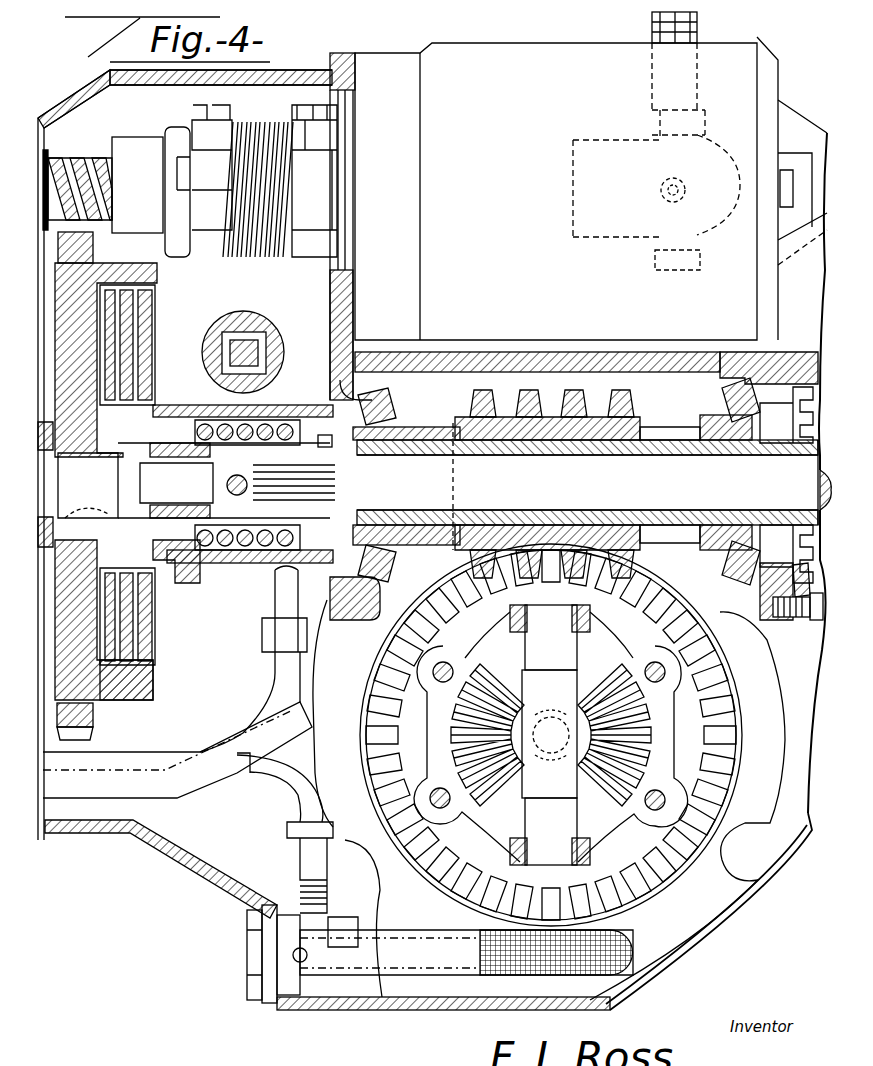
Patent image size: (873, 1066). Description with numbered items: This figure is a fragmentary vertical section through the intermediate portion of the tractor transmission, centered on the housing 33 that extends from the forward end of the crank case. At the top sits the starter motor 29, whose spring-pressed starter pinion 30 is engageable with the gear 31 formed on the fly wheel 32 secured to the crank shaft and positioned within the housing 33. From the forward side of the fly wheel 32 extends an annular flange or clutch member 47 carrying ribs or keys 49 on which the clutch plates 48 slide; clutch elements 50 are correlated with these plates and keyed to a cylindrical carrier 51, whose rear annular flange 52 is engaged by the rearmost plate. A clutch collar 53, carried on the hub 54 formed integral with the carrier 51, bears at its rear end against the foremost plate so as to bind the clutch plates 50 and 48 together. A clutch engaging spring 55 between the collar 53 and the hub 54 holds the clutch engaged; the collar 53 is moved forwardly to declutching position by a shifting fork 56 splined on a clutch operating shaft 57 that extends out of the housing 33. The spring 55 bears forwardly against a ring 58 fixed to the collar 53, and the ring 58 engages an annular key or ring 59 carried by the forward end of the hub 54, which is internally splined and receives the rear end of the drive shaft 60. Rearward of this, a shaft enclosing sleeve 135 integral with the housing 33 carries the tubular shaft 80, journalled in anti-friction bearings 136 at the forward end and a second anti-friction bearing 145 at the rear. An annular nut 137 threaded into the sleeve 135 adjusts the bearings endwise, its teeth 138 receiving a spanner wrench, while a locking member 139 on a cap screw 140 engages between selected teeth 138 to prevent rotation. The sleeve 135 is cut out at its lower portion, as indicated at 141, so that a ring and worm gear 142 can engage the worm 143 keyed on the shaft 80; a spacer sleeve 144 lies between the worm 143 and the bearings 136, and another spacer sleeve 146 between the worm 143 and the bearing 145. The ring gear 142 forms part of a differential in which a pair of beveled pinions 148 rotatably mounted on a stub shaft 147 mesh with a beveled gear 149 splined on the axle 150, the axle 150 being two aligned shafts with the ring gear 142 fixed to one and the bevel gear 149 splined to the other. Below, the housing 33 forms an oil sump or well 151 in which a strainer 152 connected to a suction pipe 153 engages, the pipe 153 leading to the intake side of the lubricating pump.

The starter motor 29 is at (517, 60).
The starter pinion 30 is at (133, 160).
The gear 31 is at (93, 252).
The fly wheel 32 is at (97, 690).
The housing 33 is at (160, 850).
The annular flange or clutch member 47 is at (157, 283).
The clutch plates 48 is at (160, 305).
The ribs or keys 49 is at (160, 298).
The clutch elements 50 is at (155, 372).
The carrier 51 is at (158, 600).
The annular flange 52 is at (226, 480).
The clutch collar 53 is at (198, 585).
The cylindrical extension or hub 54 is at (245, 565).
The clutch engaging spring 55 is at (330, 400).
The shifting fork 56 is at (282, 390).
The clutch operating shaft 57 is at (265, 325).
The ring 58 is at (347, 380).
The annular key or ring 59 is at (332, 433).
The drive shaft 60 is at (418, 465).
The tubular shaft 80 is at (748, 456).
The shaft enclosing sleeve 135 is at (705, 360).
The anti-friction bearings 136 is at (735, 458).
The annular nut 137 is at (785, 443).
The teeth 138 is at (815, 355).
The locking member 139 is at (808, 622).
The cap screw 140 is at (775, 650).
The cutout 141 is at (710, 595).
The ring and worm gear 142 is at (720, 728).
The worm 143 is at (635, 400).
The spacer sleeve 144 is at (665, 430).
The second anti-friction bearing 145 is at (388, 530).
The spacer sleeve 146 is at (435, 515).
The stub shaft 147 is at (549, 735).
The beveled pinions 148 is at (510, 612).
The beveled gear 149 is at (455, 722).
The axle 150 is at (550, 750).
The oil sump or well 151 is at (650, 962).
The strainer 152 is at (393, 965).
The suction pipe 153 is at (300, 790).